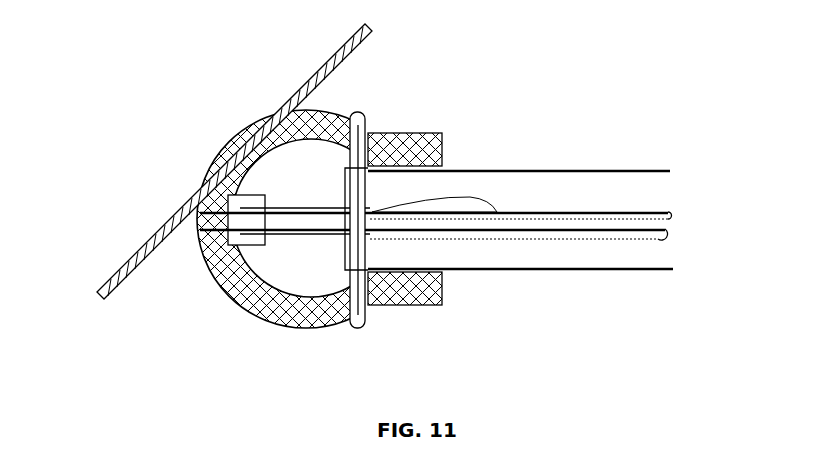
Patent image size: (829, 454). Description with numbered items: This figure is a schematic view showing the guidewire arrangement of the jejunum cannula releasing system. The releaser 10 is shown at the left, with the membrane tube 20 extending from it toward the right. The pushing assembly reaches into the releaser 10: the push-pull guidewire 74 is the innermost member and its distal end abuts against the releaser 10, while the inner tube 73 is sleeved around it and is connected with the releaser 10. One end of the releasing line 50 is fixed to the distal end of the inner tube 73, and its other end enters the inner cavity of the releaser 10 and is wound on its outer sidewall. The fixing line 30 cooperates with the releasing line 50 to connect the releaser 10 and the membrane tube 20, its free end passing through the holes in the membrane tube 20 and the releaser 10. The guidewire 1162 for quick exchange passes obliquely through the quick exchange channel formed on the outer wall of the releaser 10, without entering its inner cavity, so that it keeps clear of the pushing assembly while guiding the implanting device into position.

The releaser 10 is at (250, 308).
The membrane tube 20 is at (652, 171).
The fixing line 30 is at (365, 118).
The releasing line 50 is at (497, 212).
The inner tube 73 is at (651, 208).
The push-pull guidewire 74 is at (282, 210).
The guidewire for quick exchange 1162 is at (170, 218).